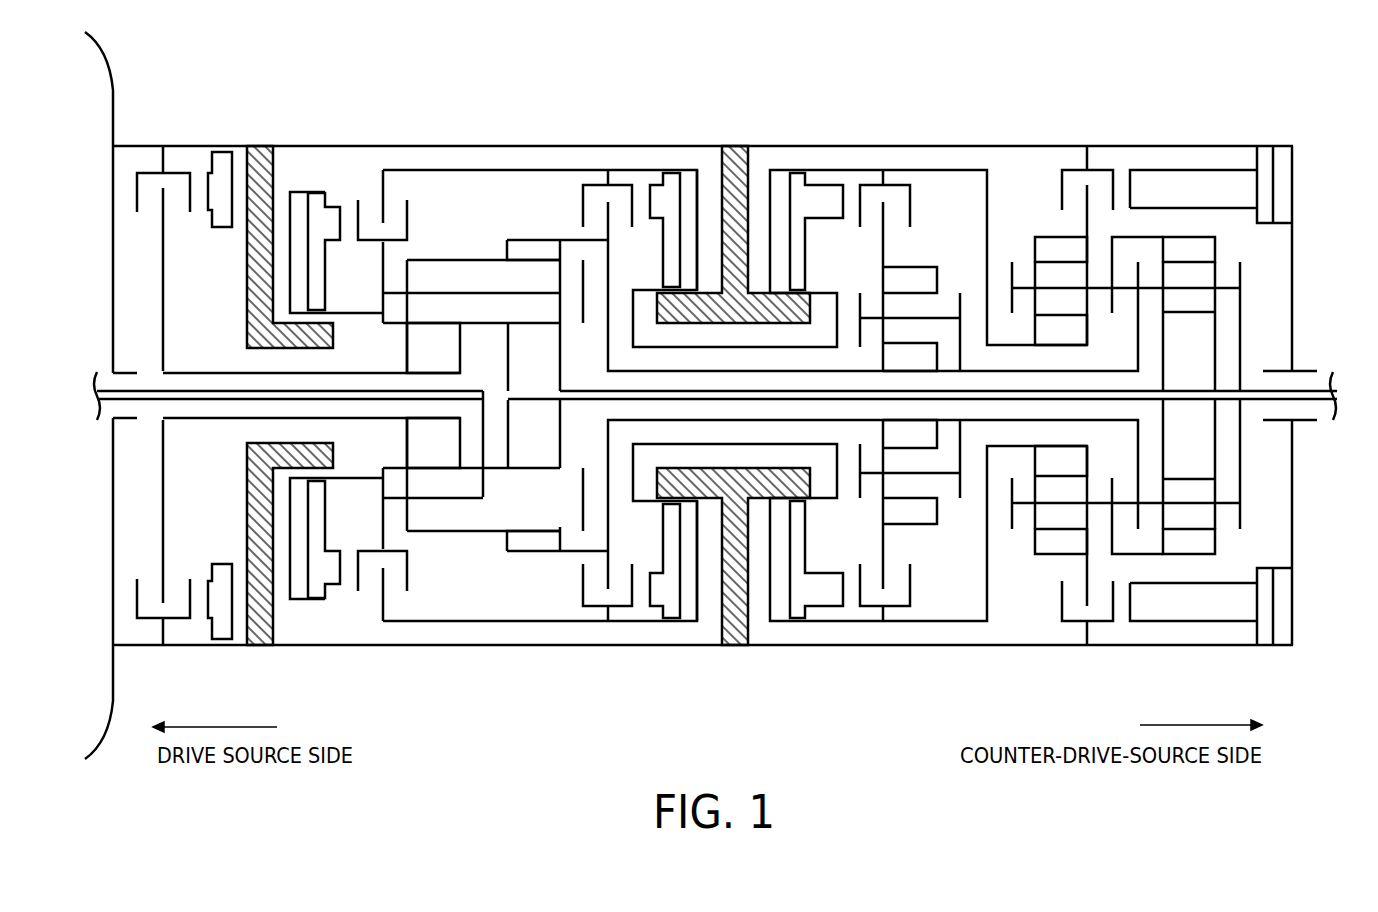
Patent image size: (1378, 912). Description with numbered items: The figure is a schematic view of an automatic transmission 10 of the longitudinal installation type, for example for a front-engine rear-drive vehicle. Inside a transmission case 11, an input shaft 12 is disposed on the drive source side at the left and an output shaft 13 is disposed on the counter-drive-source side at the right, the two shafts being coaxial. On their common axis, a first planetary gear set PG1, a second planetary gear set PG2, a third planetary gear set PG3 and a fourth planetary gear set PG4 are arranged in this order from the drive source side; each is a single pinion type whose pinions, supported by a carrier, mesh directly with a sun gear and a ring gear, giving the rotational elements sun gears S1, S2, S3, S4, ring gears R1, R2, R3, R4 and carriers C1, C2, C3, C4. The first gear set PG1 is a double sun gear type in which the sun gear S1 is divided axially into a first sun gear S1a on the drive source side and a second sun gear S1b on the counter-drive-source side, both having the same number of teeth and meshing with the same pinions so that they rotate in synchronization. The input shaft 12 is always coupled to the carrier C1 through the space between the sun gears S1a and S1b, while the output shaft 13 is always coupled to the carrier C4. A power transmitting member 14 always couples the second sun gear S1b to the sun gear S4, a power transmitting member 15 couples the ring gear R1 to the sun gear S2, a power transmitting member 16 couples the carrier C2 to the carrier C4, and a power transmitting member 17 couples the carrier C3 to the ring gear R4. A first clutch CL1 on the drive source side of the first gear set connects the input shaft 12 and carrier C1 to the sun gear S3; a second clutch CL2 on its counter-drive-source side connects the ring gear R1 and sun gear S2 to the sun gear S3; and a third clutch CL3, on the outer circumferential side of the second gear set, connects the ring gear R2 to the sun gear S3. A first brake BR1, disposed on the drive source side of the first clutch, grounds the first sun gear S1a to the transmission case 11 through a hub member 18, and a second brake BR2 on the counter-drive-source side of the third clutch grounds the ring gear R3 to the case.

The automatic transmission 10 is at (715, 388).
The transmission case 11 is at (463, 146).
The input shaft 12 is at (107, 406).
The output shaft 13 is at (1318, 388).
The power transmitting member 14 is at (585, 402).
The power transmitting member 15 is at (611, 272).
The power transmitting member 16 is at (1083, 366).
The power transmitting member 17 is at (1140, 238).
The hub member 18 is at (165, 330).
The first brake BR1 is at (184, 395).
The second brake BR2 is at (1107, 144).
The first clutch CL1 is at (355, 183).
The second clutch CL2 is at (570, 193).
The third clutch CL3 is at (853, 236).
The first planetary gear set PG1 is at (385, 376).
The second planetary gear set PG2 is at (918, 370).
The third planetary gear set PG3 is at (1117, 363).
The fourth planetary gear set PG4 is at (1211, 377).
The ring gear R1 is at (557, 394).
The ring gear R2 is at (910, 395).
The ring gear R3 is at (1061, 395).
The ring gear R4 is at (1189, 395).
The sun gear S1 is at (447, 395).
The first sun gear S1a is at (433, 395).
The second sun gear S1b is at (531, 395).
The sun gear S2 is at (910, 395).
The sun gear S3 is at (1061, 395).
The sun gear S4 is at (1189, 395).
The carrier C1 is at (586, 395).
The carrier C2 is at (918, 384).
The carrier C3 is at (1118, 395).
The carrier C4 is at (1258, 391).